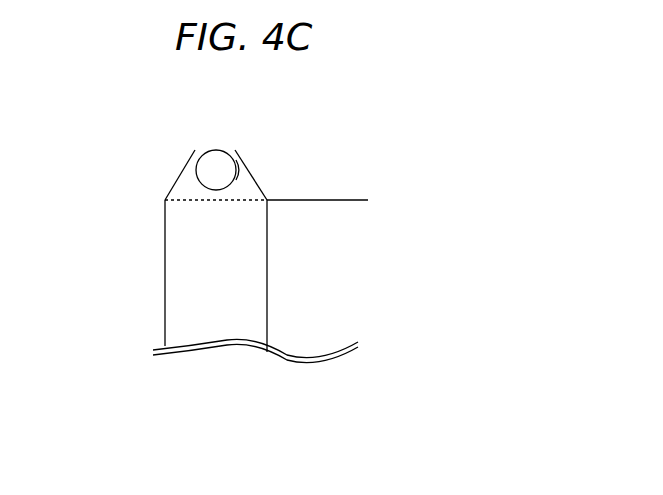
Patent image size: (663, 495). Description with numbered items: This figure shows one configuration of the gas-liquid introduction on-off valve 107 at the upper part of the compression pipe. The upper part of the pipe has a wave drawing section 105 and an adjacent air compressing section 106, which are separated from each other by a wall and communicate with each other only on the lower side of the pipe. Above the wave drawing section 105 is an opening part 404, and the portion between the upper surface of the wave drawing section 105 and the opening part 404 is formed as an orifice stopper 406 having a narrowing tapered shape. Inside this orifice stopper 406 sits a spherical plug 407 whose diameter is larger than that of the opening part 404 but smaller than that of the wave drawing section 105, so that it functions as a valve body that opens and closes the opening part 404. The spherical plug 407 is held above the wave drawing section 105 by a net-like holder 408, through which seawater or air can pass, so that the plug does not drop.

The wave drawing section 105 is at (182, 252).
The air compressing section 106 is at (302, 310).
The gas-liquid introduction on-off valve 107 is at (248, 150).
The opening part 404 is at (222, 148).
The orifice stopper 406 is at (175, 183).
The spherical plug 407 is at (236, 170).
The net-like holder 408 is at (195, 202).